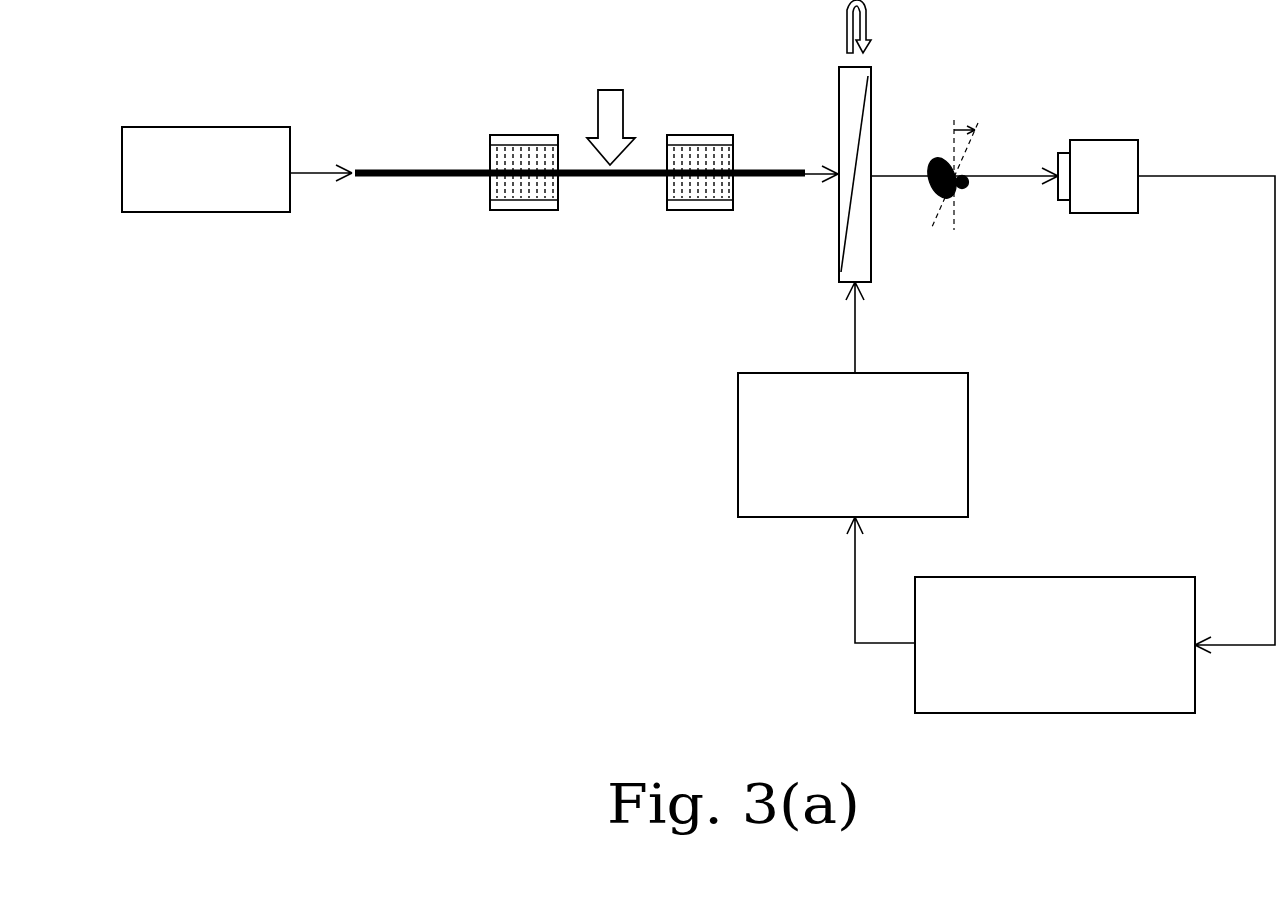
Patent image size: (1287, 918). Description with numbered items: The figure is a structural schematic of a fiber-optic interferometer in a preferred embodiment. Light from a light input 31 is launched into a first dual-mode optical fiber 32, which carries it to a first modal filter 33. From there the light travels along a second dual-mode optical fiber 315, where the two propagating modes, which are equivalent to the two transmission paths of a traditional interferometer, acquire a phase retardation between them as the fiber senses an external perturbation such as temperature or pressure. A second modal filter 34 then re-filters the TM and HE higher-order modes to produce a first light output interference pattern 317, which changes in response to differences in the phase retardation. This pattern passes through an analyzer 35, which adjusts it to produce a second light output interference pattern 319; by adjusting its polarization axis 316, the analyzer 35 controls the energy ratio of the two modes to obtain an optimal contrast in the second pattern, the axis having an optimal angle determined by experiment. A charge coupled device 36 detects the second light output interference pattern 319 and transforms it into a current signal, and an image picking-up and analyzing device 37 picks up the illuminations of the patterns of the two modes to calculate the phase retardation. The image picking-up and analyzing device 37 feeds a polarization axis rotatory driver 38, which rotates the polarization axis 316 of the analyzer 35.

The light input 31 is at (198, 200).
The first dual-mode optical fiber 32 is at (400, 177).
The first modal filter 33 is at (525, 190).
The second modal filter 34 is at (697, 190).
The second dual-mode optical fiber 315 is at (625, 177).
The analyzer 35 is at (848, 158).
The polarization axis 316 is at (858, 150).
The first light output interference pattern 317 is at (817, 178).
The second light output interference pattern 319 is at (928, 197).
The charge coupled device 36 is at (1105, 160).
The image picking-up and analyzing device 37 is at (1043, 595).
The polarization axis rotatory driver 38 is at (758, 475).